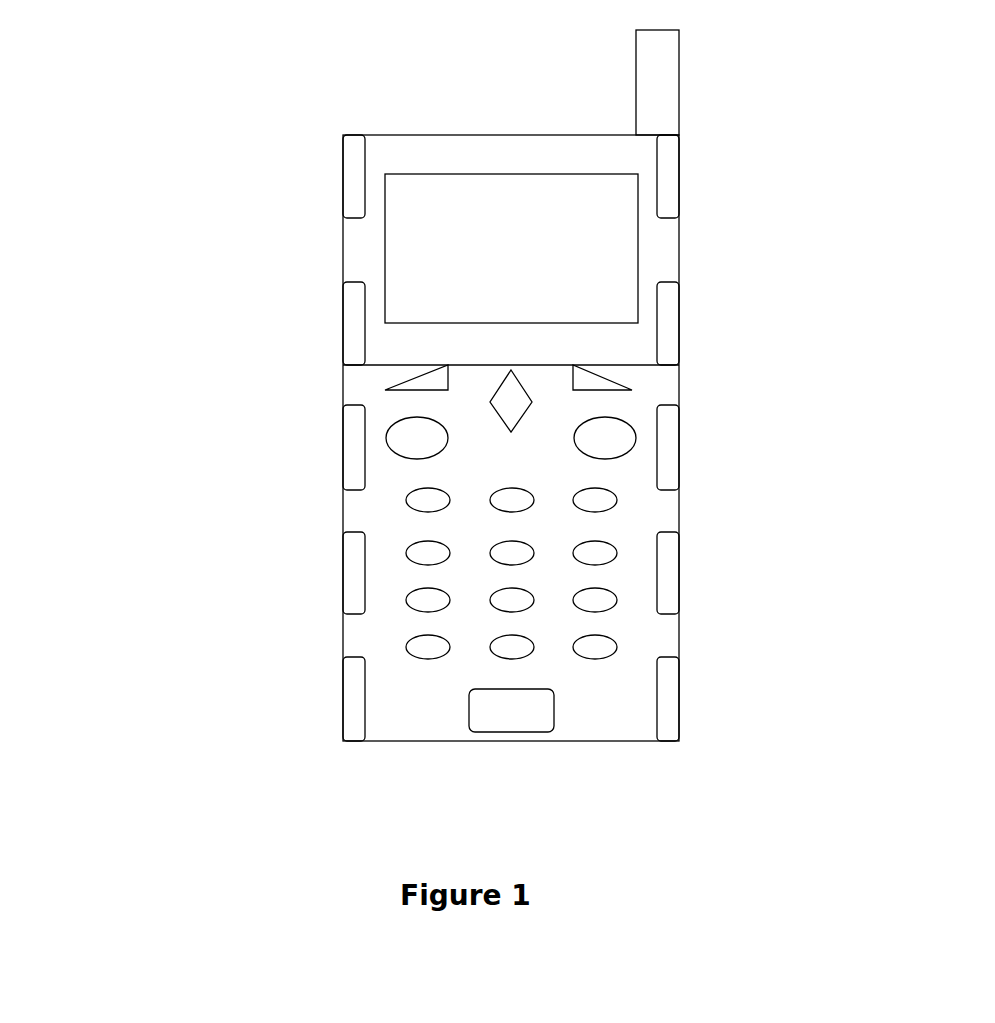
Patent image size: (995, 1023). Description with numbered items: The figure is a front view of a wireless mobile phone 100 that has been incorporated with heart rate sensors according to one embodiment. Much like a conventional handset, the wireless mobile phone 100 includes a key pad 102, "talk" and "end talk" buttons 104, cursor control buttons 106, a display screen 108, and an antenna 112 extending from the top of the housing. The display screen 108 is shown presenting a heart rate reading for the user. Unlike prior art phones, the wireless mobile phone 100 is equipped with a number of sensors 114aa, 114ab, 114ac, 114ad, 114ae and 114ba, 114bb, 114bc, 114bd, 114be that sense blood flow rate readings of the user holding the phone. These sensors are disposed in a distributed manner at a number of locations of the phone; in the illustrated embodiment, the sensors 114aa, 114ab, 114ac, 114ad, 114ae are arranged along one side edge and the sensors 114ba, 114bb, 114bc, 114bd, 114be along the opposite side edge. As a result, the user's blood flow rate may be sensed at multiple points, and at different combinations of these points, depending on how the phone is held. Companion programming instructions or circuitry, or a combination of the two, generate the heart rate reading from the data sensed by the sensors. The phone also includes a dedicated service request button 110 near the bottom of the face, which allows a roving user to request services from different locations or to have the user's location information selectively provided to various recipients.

The wireless mobile phone 100 is at (90, 83).
The key pad 102 is at (427, 530).
The "talk" and "end talk" buttons 104 is at (452, 445).
The cursor control buttons 106 is at (570, 365).
The display screen 108 is at (395, 193).
The dedicated service request button 110 is at (490, 722).
The antenna 112 is at (658, 114).
The sensor 114aa is at (343, 195).
The sensor 114ab is at (343, 298).
The sensor 114ac is at (343, 447).
The sensor 114ad is at (343, 598).
The sensor 114ae is at (343, 680).
The sensor 114ba is at (679, 195).
The sensor 114bb is at (679, 280).
The sensor 114bc is at (679, 447).
The sensor 114bd is at (679, 597).
The sensor 114be is at (679, 697).